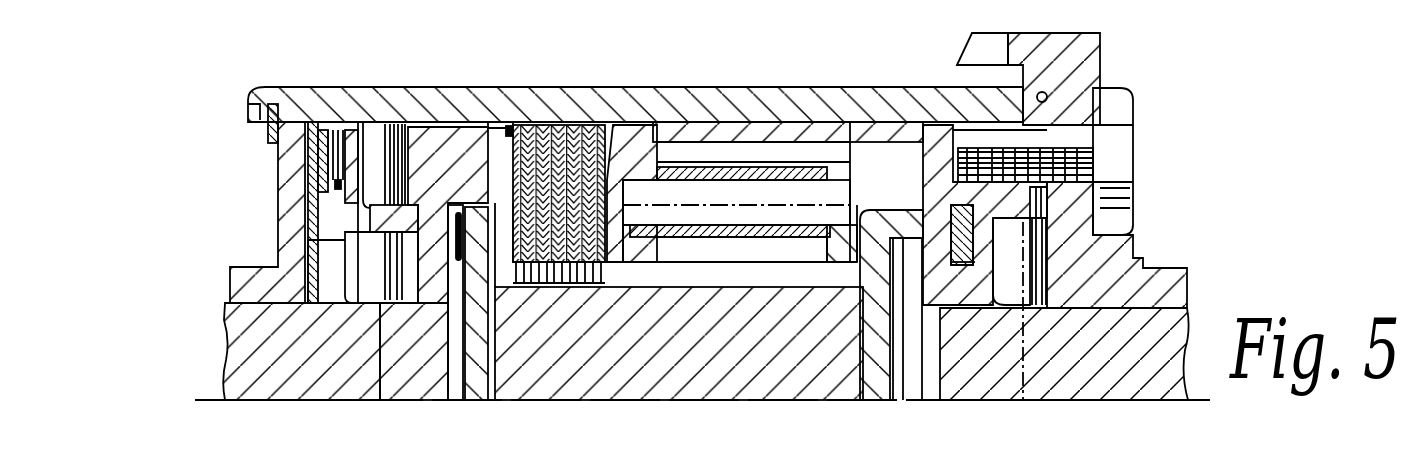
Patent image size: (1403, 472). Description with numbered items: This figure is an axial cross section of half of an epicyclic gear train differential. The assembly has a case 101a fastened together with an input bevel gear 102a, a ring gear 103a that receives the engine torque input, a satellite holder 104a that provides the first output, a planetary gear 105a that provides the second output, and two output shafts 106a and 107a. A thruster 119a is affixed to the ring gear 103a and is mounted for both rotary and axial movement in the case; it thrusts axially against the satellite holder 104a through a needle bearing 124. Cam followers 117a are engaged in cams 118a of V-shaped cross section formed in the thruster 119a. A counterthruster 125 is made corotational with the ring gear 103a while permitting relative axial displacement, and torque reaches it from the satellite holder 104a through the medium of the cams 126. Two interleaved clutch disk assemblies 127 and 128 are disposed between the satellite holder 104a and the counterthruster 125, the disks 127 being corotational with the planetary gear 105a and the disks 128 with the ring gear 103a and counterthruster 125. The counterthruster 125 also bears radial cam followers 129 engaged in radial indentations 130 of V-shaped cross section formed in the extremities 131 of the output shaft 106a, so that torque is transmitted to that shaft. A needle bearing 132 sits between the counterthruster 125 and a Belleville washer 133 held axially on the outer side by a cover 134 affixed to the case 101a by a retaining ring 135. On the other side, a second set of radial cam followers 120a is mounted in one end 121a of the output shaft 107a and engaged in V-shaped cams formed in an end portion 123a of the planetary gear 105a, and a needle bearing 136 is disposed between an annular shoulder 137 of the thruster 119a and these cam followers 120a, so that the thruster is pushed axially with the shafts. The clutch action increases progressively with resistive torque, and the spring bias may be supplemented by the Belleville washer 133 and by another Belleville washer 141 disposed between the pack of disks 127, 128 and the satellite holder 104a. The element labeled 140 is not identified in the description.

The case 101a is at (502, 96).
The input bevel gear 102a is at (975, 43).
The ring gear 103a is at (745, 125).
The satellite holder 104a is at (636, 137).
The planetary gear 105a is at (552, 386).
The output shaft 106a is at (262, 376).
The output shaft 107a is at (1142, 376).
The cam followers 117a is at (1037, 255).
The cams 118a is at (1030, 225).
The thruster 119a is at (940, 128).
The radial cam followers 120a is at (910, 380).
The end of the output shaft 121a is at (965, 390).
The end portion of the planetary gear 123a is at (866, 348).
The needle bearing 124 is at (888, 160).
The counterthruster 125 is at (430, 142).
The cams 126 is at (607, 128).
The clutch disks 127 is at (512, 166).
The clutch disks 128 is at (525, 133).
The radial cam followers 129 is at (372, 125).
The radial indentations 130 is at (375, 238).
The extremities of the output shaft 131 is at (458, 372).
The needle bearing 132 is at (336, 152).
The Belleville washer 133 is at (315, 222).
The cover 134 is at (288, 196).
The retaining ring 135 is at (267, 130).
The needle bearing 136 is at (980, 258).
The annular shoulder 137 is at (968, 270).
The screw 140 is at (455, 240).
The Belleville washer 141 is at (612, 264).